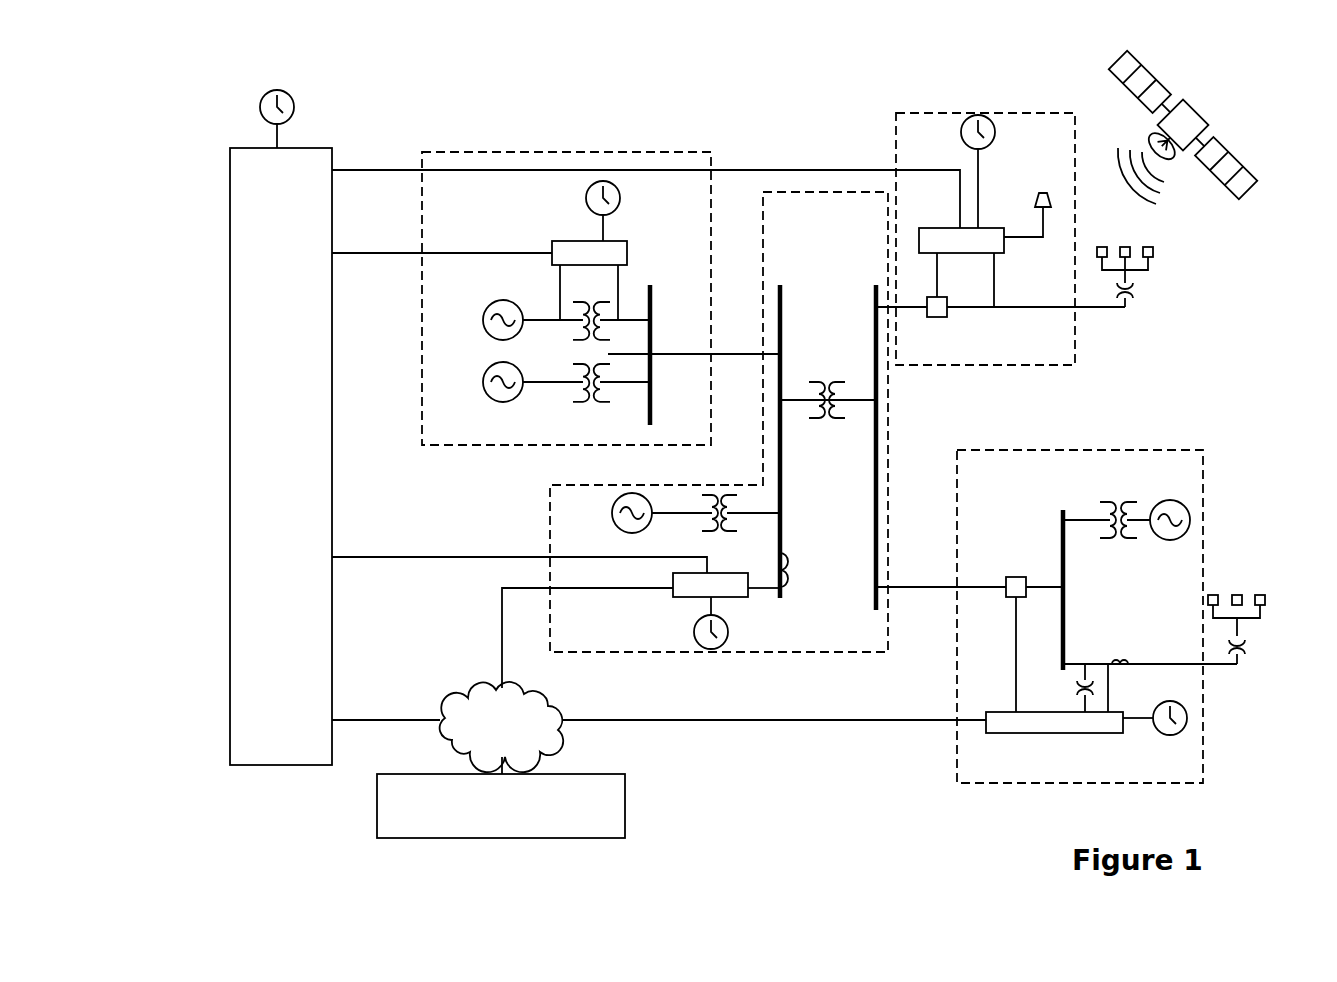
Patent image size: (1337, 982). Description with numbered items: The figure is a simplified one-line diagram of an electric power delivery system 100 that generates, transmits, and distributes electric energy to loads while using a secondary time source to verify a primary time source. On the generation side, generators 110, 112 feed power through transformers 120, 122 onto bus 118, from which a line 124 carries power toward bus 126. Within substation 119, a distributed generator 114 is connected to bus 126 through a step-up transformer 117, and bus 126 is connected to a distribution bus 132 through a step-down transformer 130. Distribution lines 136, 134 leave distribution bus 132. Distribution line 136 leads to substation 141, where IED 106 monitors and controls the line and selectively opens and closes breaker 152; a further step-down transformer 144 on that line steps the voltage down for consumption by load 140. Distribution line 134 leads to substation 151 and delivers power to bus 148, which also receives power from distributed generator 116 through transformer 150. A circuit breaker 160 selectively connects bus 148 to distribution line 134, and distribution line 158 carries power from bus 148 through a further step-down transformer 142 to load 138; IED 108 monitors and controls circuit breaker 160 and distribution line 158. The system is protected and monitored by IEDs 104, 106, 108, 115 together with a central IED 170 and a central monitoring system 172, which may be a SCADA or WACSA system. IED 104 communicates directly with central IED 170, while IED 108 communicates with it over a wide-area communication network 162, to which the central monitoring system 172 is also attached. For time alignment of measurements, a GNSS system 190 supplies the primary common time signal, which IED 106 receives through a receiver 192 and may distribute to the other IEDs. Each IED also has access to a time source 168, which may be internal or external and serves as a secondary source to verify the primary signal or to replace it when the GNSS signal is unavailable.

The electric power delivery system 100 is at (1234, 352).
The IED 104 is at (556, 241).
The IED 106 is at (929, 228).
The IED 108 is at (1097, 733).
The generator 110 is at (482, 320).
The generator 112 is at (482, 382).
The generator 114 is at (614, 516).
The IED 115 is at (682, 597).
The distributed generator 116 is at (1166, 540).
The step-up transformer 117 is at (708, 530).
The bus 118 is at (652, 410).
The substation 119 is at (550, 510).
The transformer 120 is at (580, 338).
The transformer 122 is at (589, 402).
The line 124 is at (727, 356).
The bus 126 is at (782, 420).
The step-down transformer 130 is at (823, 380).
The distribution bus 132 is at (876, 580).
The distribution line 134 is at (968, 588).
The distribution line 136 is at (912, 309).
The load 138 is at (1246, 592).
The load 140 is at (1158, 252).
The substation 141 is at (1051, 365).
The step-down transformer 142 is at (1247, 648).
The step-down transformer 144 is at (1138, 290).
The bus 148 is at (1062, 512).
The transformer 150 is at (1113, 504).
The substation 151 is at (1140, 783).
The breaker 152 is at (948, 312).
The distribution line 158 is at (1140, 661).
The circuit breaker 160 is at (1010, 577).
The communication network 162 is at (502, 727).
The time source 168 is at (295, 107).
The central IED 170 is at (281, 456).
The central monitoring system 172 is at (501, 806).
The GNSS system 190 is at (1206, 118).
The receiver 192 is at (1035, 196).